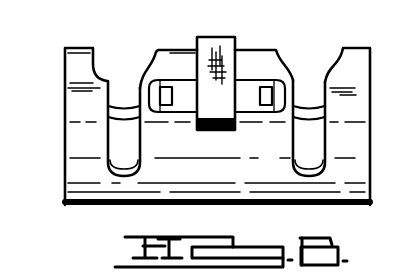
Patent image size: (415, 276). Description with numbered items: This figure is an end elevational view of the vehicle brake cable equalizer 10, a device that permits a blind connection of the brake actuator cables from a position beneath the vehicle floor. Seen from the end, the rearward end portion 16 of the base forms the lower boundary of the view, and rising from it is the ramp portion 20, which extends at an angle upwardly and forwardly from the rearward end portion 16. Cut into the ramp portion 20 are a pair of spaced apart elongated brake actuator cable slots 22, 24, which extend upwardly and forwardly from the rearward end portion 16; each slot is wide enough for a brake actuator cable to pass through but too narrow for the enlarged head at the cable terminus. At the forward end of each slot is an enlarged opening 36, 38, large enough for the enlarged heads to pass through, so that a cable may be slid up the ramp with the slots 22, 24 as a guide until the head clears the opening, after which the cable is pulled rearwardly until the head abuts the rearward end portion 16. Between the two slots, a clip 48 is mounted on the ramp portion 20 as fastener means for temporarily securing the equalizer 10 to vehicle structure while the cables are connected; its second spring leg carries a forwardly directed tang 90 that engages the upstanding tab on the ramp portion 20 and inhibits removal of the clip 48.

The brake cable equalizer 10 is at (40, 127).
The rearward end portion 16 is at (65, 192).
The ramp portion 20 is at (72, 68).
The elongated brake actuator cable slot 22 is at (110, 90).
The elongated brake actuator cable slot 24 is at (297, 141).
The enlarged opening 36 is at (100, 70).
The enlarged opening 38 is at (338, 60).
The clip 48 is at (219, 37).
The tang 90 is at (215, 117).